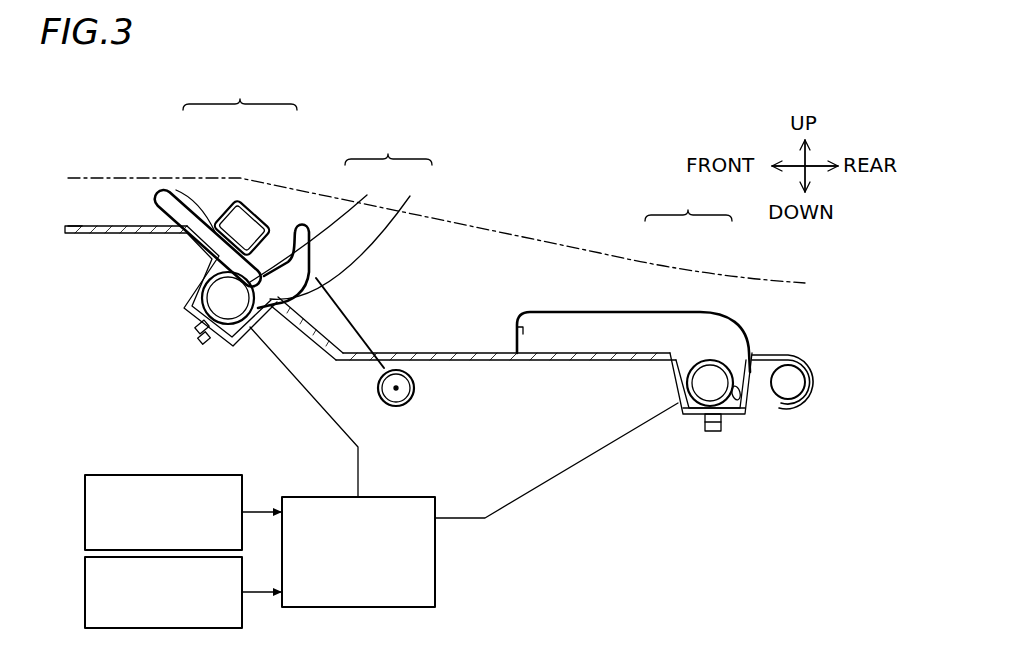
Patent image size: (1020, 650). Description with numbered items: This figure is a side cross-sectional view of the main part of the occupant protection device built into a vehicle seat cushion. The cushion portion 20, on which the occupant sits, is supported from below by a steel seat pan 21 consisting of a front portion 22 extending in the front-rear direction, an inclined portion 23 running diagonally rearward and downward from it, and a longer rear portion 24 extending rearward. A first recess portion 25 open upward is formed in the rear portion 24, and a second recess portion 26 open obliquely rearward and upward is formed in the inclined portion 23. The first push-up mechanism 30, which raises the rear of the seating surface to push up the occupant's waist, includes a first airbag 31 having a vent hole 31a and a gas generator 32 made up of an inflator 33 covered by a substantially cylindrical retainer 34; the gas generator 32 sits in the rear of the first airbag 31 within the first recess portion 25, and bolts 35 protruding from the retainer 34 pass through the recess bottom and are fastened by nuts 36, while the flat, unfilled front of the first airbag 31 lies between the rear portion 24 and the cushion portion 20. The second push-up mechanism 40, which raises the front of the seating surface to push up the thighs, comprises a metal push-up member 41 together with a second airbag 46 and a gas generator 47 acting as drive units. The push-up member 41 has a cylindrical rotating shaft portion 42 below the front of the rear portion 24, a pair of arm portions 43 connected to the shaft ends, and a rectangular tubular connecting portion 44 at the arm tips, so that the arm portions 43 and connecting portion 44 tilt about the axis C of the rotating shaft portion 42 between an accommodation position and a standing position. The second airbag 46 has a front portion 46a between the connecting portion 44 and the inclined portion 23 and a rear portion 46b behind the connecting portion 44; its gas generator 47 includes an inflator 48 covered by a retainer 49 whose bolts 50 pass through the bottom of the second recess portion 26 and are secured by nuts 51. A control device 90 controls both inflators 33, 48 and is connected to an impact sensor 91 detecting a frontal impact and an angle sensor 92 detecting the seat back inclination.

The cushion portion 20 is at (68, 178).
The seat pan 21 is at (75, 230).
The front portion 22 is at (80, 235).
The inclined portion 23 is at (196, 247).
The rear portion 24 is at (522, 362).
The first recess portion 25 is at (740, 417).
The second recess portion 26 is at (228, 334).
The first push-up mechanism 30 is at (762, 352).
The first airbag 31 is at (552, 312).
The vent hole 31a is at (516, 324).
The gas generator 32 is at (688, 204).
The inflator 33 is at (707, 374).
The retainer 34 is at (718, 360).
The bolt 35 is at (713, 433).
The nut 36 is at (702, 420).
The second push-up mechanism 40 is at (163, 178).
The push-up member 41 is at (375, 335).
The rotating shaft portion 42 is at (405, 406).
The arm portion 43 is at (340, 296).
The connecting portion 44 is at (252, 208).
The second airbag 46 is at (240, 93).
The front portion 46a is at (168, 187).
The rear portion 46b is at (298, 228).
The gas generator 47 is at (388, 146).
The inflator 48 is at (345, 235).
The retainer 49 is at (312, 226).
The bolt 50 is at (200, 339).
The nut 51 is at (196, 327).
The control device 90 is at (435, 568).
The impact sensor 91 is at (85, 514).
The angle sensor 92 is at (85, 594).
The axis C is at (394, 390).